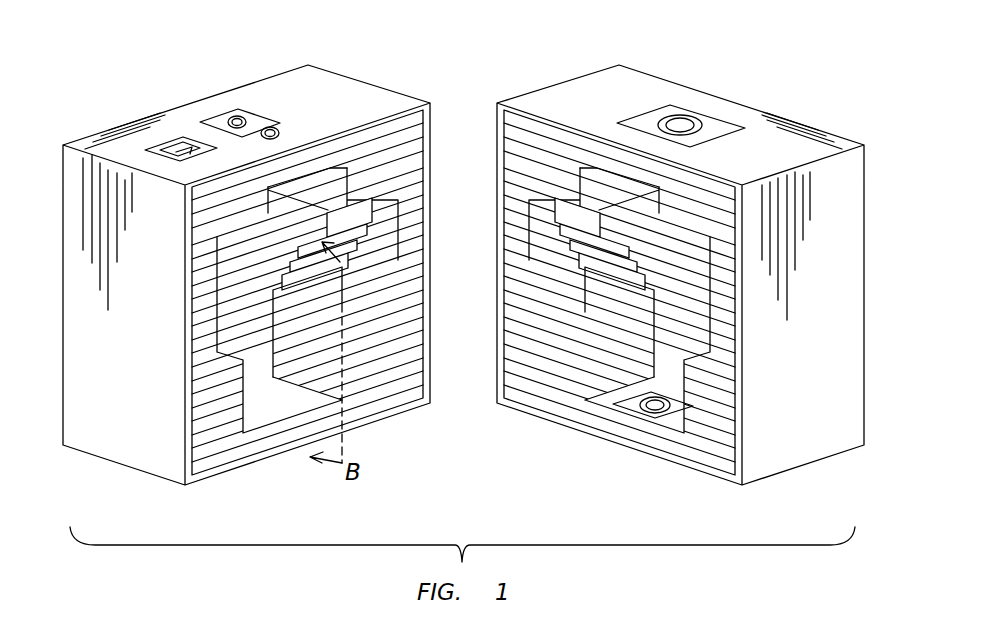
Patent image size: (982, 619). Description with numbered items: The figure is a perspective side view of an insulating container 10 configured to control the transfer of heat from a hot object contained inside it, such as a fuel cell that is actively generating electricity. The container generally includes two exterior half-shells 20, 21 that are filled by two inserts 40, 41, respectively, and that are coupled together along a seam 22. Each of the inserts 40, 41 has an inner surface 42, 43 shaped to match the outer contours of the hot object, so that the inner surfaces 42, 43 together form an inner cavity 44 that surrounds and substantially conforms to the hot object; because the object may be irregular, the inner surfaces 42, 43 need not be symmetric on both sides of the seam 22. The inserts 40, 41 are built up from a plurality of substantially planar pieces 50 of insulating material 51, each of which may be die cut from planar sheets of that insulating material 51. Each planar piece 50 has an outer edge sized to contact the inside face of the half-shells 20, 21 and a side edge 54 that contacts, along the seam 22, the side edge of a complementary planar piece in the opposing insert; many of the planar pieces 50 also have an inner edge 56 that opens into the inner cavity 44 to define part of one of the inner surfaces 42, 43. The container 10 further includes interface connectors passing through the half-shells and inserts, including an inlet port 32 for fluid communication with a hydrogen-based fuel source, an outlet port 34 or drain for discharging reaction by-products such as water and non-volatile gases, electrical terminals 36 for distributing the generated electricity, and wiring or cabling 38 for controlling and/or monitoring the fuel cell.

The insulating container 10 is at (788, 41).
The half-shell 20 is at (112, 128).
The half-shell 21 is at (818, 128).
The seam 22 is at (523, 118).
The inlet port 32 is at (685, 120).
The outlet port 34 is at (671, 400).
The electrical terminals 36 is at (257, 122).
The wiring or cabling 38 is at (177, 143).
The insert 40 is at (233, 422).
The insert 41 is at (702, 433).
The inner surface 42 is at (315, 357).
The inner surface 43 is at (611, 361).
The inner cavity 44 is at (643, 241).
The planar pieces 50 is at (396, 379).
The insulating material 51 is at (213, 198).
The side edge 54 is at (530, 178).
The inner edge 56 is at (332, 203).